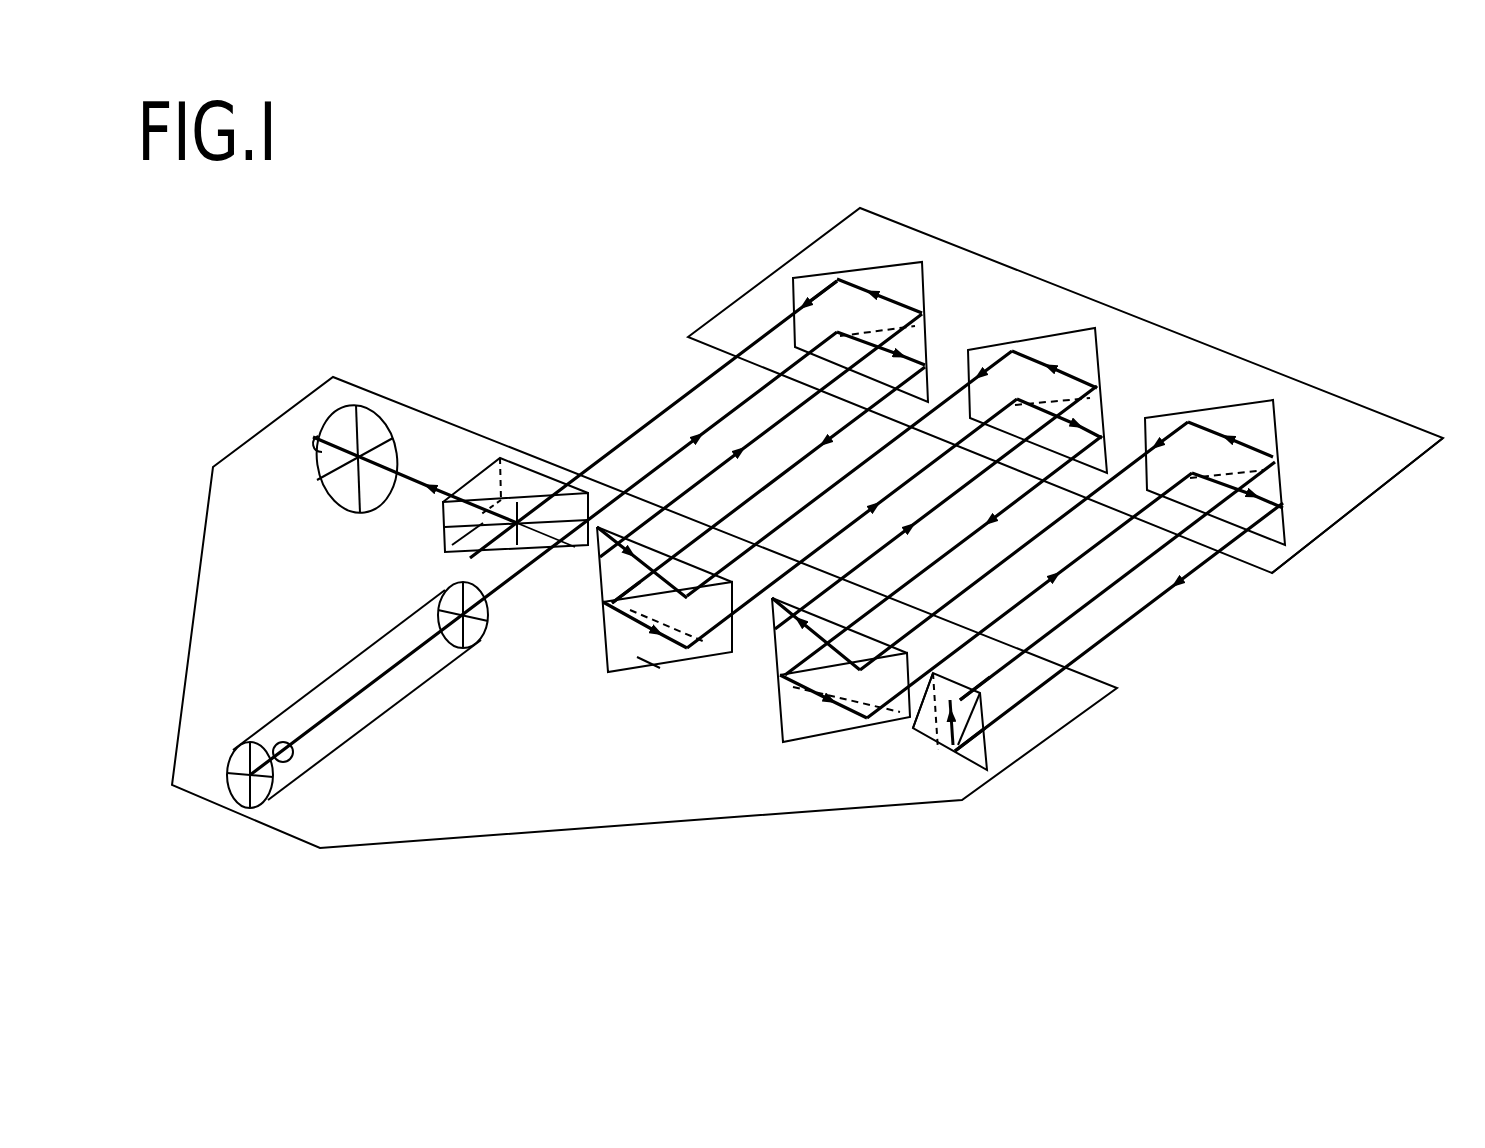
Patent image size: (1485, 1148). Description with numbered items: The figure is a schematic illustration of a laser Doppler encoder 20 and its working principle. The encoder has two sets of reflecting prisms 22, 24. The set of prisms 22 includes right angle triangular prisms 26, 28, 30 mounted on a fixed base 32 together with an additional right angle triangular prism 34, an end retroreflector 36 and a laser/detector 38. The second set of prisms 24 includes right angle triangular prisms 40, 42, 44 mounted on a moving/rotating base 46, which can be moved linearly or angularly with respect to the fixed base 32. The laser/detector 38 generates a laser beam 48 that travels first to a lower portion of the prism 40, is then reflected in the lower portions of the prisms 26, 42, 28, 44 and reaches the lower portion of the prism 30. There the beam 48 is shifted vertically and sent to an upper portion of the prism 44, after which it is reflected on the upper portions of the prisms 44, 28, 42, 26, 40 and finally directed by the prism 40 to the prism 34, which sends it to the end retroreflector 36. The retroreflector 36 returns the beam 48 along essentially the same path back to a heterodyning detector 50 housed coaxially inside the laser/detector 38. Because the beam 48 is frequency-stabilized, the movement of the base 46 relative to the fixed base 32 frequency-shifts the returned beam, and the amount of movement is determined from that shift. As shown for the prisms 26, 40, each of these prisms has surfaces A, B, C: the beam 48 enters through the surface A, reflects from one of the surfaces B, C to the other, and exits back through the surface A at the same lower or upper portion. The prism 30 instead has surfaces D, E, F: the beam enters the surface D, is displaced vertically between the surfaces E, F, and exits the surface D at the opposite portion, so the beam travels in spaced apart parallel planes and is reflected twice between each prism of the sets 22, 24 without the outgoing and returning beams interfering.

The laser Doppler encoder 20 is at (586, 281).
The set of reflecting prisms 22 is at (698, 757).
The second set of prisms 24 is at (1174, 364).
The right angle triangular prism 26 is at (605, 676).
The right angle triangular prism 28 is at (783, 742).
The right angle triangular prism 30 is at (953, 752).
The fixed base 32 is at (493, 813).
The right angle triangular prism 34 is at (535, 468).
The end retroreflector 36 is at (370, 404).
The laser/detector 38 is at (333, 753).
The right angle triangular prism 40 is at (920, 262).
The right angle triangular prism 42 is at (1097, 328).
The right angle triangular prism 44 is at (1276, 400).
The moving/rotating base 46 is at (1375, 424).
The laser beam 48 is at (517, 578).
The heterodyning detector 50 is at (280, 745).
The surface A is at (817, 323).
The surface B is at (935, 327).
The surface C is at (885, 265).
The surface D is at (988, 738).
The surface E is at (940, 757).
The surface F is at (990, 710).